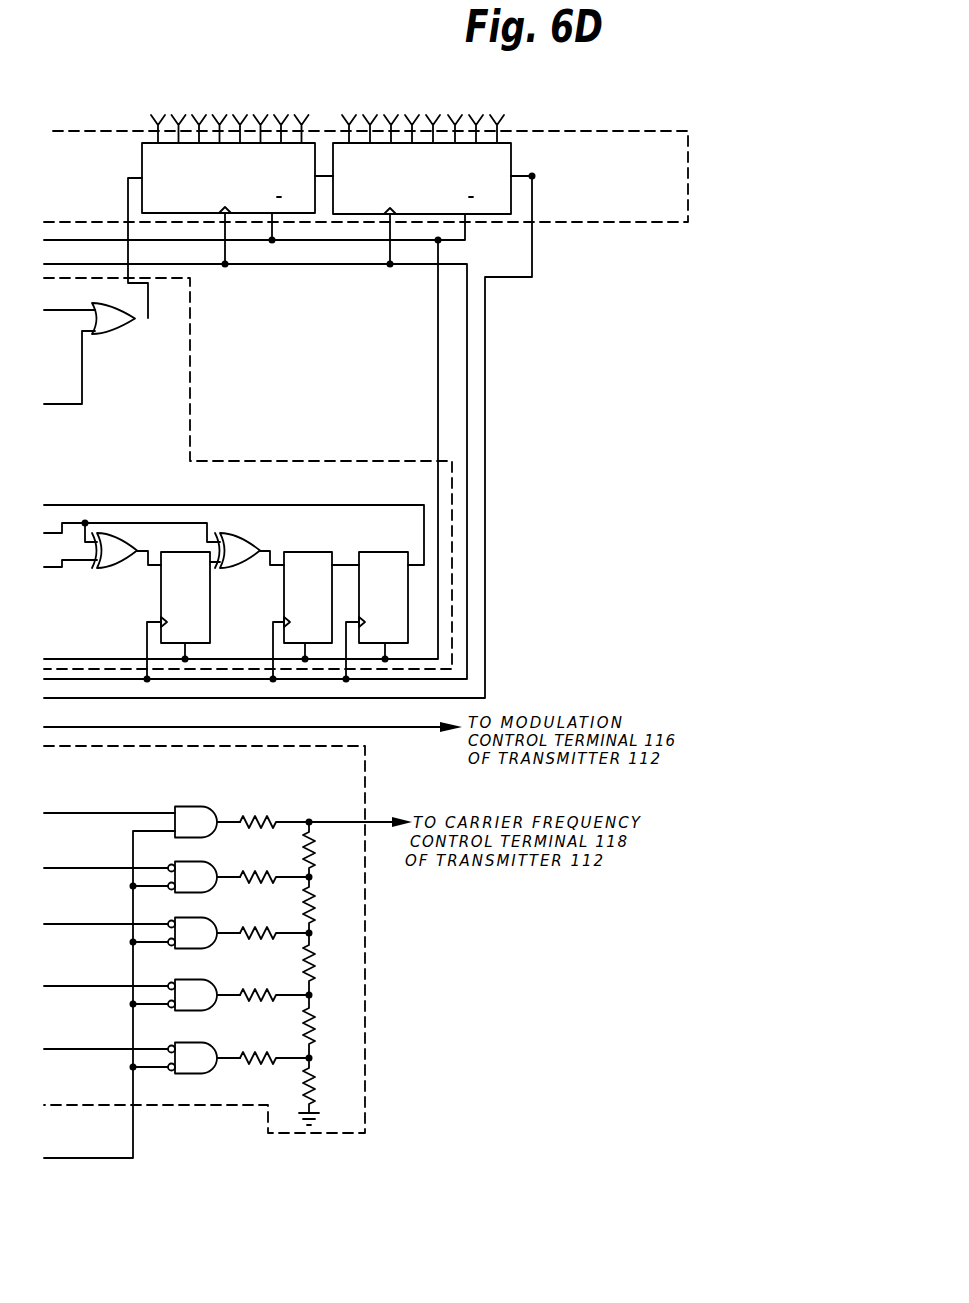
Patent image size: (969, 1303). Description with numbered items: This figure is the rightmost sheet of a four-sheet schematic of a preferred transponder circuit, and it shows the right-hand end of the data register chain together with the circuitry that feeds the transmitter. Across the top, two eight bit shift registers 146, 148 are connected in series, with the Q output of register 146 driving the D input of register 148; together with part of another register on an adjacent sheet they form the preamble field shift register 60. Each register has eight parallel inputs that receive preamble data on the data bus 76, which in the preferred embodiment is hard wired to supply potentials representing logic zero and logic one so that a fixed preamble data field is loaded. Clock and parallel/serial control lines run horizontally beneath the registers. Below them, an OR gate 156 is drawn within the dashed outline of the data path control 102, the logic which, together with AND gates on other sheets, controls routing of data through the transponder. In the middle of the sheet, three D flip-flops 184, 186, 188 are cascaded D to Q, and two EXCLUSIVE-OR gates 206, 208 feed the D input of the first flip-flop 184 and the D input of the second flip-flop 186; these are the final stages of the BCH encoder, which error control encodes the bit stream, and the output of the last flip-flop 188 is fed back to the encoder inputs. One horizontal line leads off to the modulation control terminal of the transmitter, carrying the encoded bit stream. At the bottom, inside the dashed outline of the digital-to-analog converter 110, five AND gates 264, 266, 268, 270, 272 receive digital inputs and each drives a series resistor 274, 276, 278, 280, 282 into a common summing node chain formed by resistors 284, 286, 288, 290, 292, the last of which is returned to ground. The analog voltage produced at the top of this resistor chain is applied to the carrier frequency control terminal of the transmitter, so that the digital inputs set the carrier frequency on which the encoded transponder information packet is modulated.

The data bus 76 is at (412, 103).
The eight bit shift register 146 is at (198, 189).
The eight bit shift register 148 is at (375, 189).
The preamble field shift register 60 is at (315, 222).
The OR gate 156 is at (89, 353).
The data path control 102 is at (190, 350).
The EXCLUSIVE-OR gate 206 is at (106, 559).
The EXCLUSIVE-OR gate 208 is at (229, 559).
The D flip-flop 184 is at (167, 605).
The D flip-flop 186 is at (290, 605).
The D flip-flop 188 is at (365, 605).
The AND gate 264 is at (207, 822).
The AND gate 266 is at (204, 877).
The AND gate 268 is at (204, 932).
The AND gate 270 is at (204, 995).
The AND gate 272 is at (204, 1058).
The resistor 274 is at (262, 818).
The resistor 276 is at (256, 873).
The resistor 278 is at (254, 930).
The resistor 280 is at (252, 990).
The resistor 282 is at (252, 1053).
The resistor 284 is at (314, 862).
The resistor 286 is at (314, 917).
The resistor 288 is at (314, 969).
The resistor 290 is at (314, 1034).
The resistor 292 is at (314, 1090).
The digital-to-analog converter 110 is at (378, 1008).